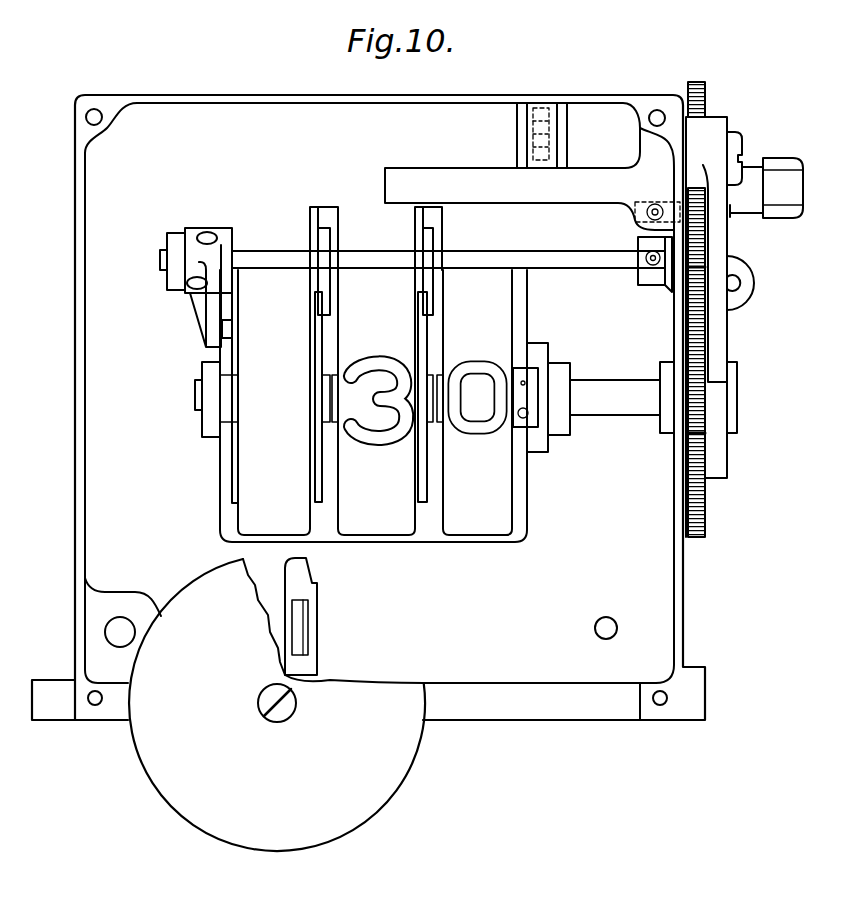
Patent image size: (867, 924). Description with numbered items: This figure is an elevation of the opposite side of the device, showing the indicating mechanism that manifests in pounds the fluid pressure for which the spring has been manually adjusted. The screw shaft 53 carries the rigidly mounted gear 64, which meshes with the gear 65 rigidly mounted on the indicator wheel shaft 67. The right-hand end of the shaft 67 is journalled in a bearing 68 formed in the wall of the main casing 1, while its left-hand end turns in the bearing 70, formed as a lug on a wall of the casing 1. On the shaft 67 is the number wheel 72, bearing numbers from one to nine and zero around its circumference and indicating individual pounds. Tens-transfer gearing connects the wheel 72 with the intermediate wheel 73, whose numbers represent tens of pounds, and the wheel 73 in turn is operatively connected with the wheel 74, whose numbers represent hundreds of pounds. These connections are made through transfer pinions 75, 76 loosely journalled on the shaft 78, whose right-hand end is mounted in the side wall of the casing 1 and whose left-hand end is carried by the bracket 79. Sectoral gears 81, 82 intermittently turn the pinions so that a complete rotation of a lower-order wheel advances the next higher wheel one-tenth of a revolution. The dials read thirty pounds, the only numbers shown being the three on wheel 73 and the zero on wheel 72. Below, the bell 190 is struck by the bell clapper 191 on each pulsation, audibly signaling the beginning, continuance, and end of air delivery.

The main casing 1 is at (684, 598).
The screw shaft 53 is at (748, 178).
The gear 64 is at (708, 98).
The gear 65 is at (706, 525).
The indicator wheel shaft 67 is at (605, 390).
The bearing 68 is at (663, 432).
The bearing 70 is at (211, 418).
The number wheel 72 is at (490, 520).
The number wheel 73 is at (385, 517).
The number wheel 74 is at (265, 402).
The transfer pinion 75 is at (444, 235).
The transfer pinion 76 is at (340, 235).
The shaft 78 is at (560, 262).
The bracket 79 is at (180, 238).
The sectoral gear 81 is at (422, 503).
The sectoral gear 82 is at (317, 503).
The bell 190 is at (383, 790).
The bell clapper 191 is at (298, 665).